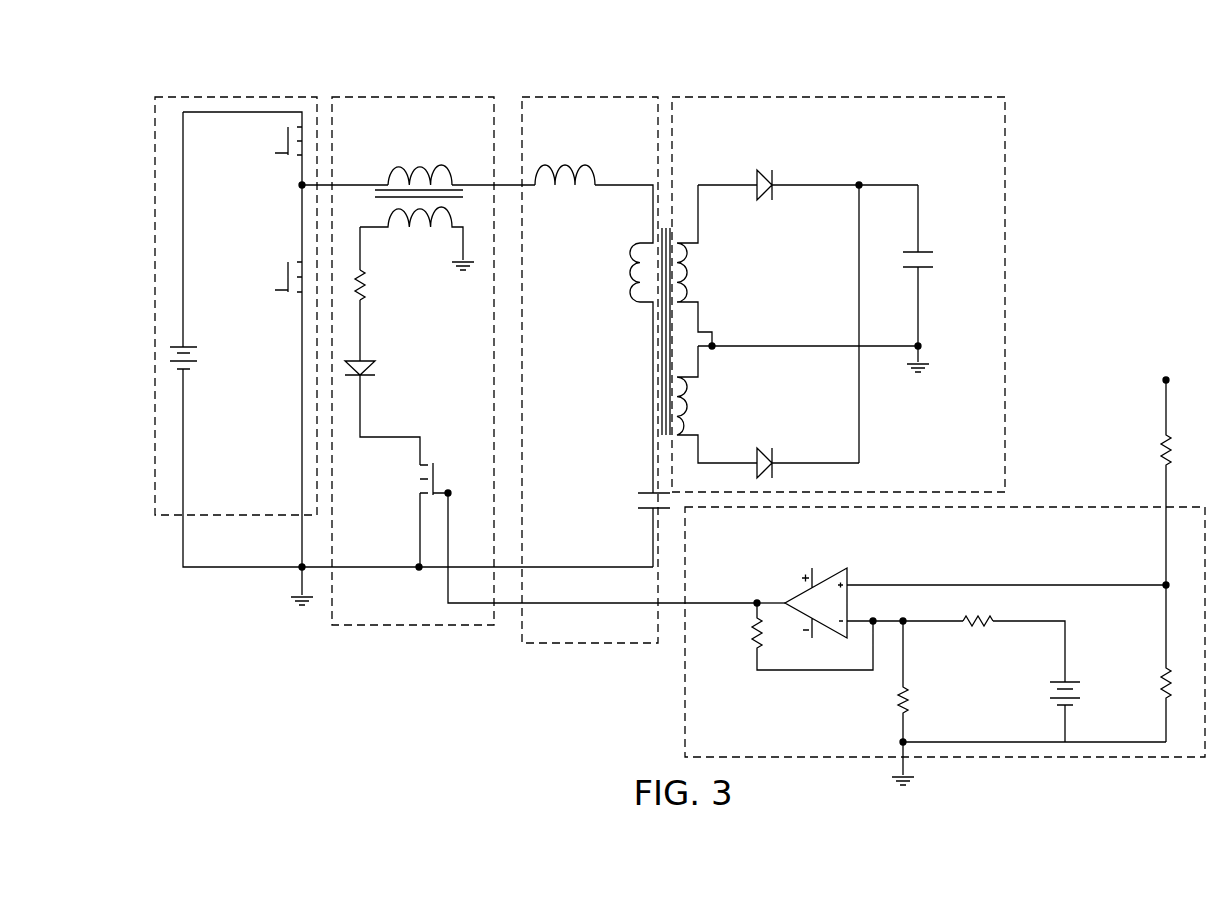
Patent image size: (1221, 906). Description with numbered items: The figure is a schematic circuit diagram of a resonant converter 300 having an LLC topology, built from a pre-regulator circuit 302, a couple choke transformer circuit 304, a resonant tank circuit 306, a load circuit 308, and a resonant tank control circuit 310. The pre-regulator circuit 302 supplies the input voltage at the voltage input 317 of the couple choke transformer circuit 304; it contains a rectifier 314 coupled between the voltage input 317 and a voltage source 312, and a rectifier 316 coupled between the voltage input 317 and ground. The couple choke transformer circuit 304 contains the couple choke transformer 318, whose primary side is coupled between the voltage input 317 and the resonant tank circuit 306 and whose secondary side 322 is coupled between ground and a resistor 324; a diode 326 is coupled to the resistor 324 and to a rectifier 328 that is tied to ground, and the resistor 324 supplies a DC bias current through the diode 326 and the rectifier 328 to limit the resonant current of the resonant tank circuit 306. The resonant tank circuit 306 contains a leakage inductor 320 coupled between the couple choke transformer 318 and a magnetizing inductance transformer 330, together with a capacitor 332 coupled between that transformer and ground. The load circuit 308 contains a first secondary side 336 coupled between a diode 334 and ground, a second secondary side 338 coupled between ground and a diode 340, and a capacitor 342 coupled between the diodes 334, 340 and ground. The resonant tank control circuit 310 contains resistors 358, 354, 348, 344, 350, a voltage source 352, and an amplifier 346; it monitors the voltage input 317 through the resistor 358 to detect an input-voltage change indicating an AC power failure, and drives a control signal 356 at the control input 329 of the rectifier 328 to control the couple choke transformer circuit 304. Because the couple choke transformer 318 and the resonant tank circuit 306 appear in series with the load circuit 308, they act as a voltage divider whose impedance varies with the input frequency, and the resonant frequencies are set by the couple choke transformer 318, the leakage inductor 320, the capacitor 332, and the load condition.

The resonant converter 300 is at (1108, 58).
The pre-regulator circuit 302 is at (236, 97).
The couple choke transformer circuit 304 is at (412, 97).
The resonant tank circuit 306 is at (602, 97).
The load circuit 308 is at (838, 97).
The resonant tank control circuit 310 is at (685, 693).
The voltage source 312 is at (200, 357).
The rectifier 314 is at (285, 140).
The rectifier 316 is at (285, 278).
The voltage input 317 is at (300, 186).
The couple choke transformer 318 is at (418, 162).
The leakage inductor 320 is at (567, 162).
The secondary side 322 is at (438, 215).
The resistor 324 is at (368, 296).
The diode 326 is at (383, 362).
The rectifier 328 is at (438, 470).
The control input 329 is at (452, 493).
The magnetizing inductance transformer 330 is at (630, 290).
The capacitor 332 is at (637, 491).
The diode 334 is at (762, 165).
The first secondary side 336 is at (690, 300).
The second secondary side 338 is at (690, 424).
The diode 340 is at (780, 459).
The capacitor 342 is at (936, 254).
The resistor 344 is at (752, 632).
The amplifier 346 is at (850, 568).
The resistor 348 is at (896, 696).
The resistor 350 is at (970, 634).
The voltage source 352 is at (1048, 694).
The resistor 354 is at (1155, 680).
The control signal 356 is at (726, 600).
The resistor 358 is at (1155, 445).